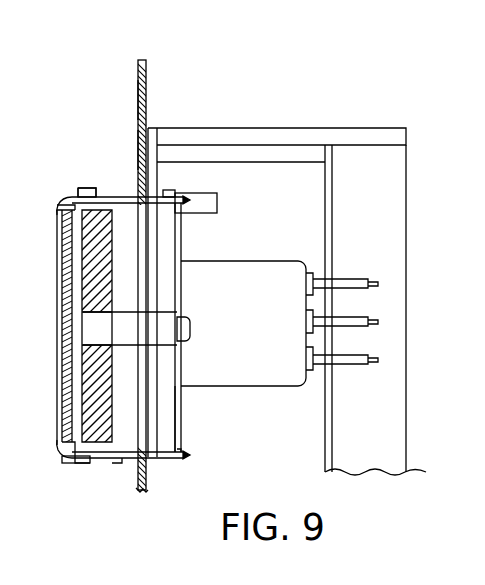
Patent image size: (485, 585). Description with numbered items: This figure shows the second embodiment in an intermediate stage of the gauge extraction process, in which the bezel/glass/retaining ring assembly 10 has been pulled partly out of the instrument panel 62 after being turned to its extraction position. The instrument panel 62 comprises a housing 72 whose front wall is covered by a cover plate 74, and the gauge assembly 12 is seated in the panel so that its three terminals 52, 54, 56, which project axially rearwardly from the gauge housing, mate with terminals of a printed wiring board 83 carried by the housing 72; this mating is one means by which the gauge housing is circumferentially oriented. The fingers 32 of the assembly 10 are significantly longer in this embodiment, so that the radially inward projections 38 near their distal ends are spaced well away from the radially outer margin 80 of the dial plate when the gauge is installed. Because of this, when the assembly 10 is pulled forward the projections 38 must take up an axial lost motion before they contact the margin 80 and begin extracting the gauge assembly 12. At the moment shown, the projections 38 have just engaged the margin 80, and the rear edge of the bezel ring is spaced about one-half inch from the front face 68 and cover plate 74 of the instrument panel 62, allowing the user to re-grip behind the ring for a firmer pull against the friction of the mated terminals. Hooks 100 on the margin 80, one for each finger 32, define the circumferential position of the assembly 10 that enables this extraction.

The bezel/glass/retaining ring assembly 10 is at (56, 196).
The gauge assembly 12 is at (284, 262).
The fingers 32 is at (154, 196).
The radial projections 38 is at (217, 207).
The terminal 52 is at (352, 283).
The terminal 54 is at (352, 321).
The terminal 56 is at (352, 359).
The instrument panel 62 is at (145, 58).
The front face 68 is at (137, 148).
The housing 72 is at (268, 127).
The cover plate 74 is at (138, 97).
The radially outer margin 80 is at (180, 394).
The printed wiring board 83 is at (334, 210).
The hooks 100 is at (168, 190).